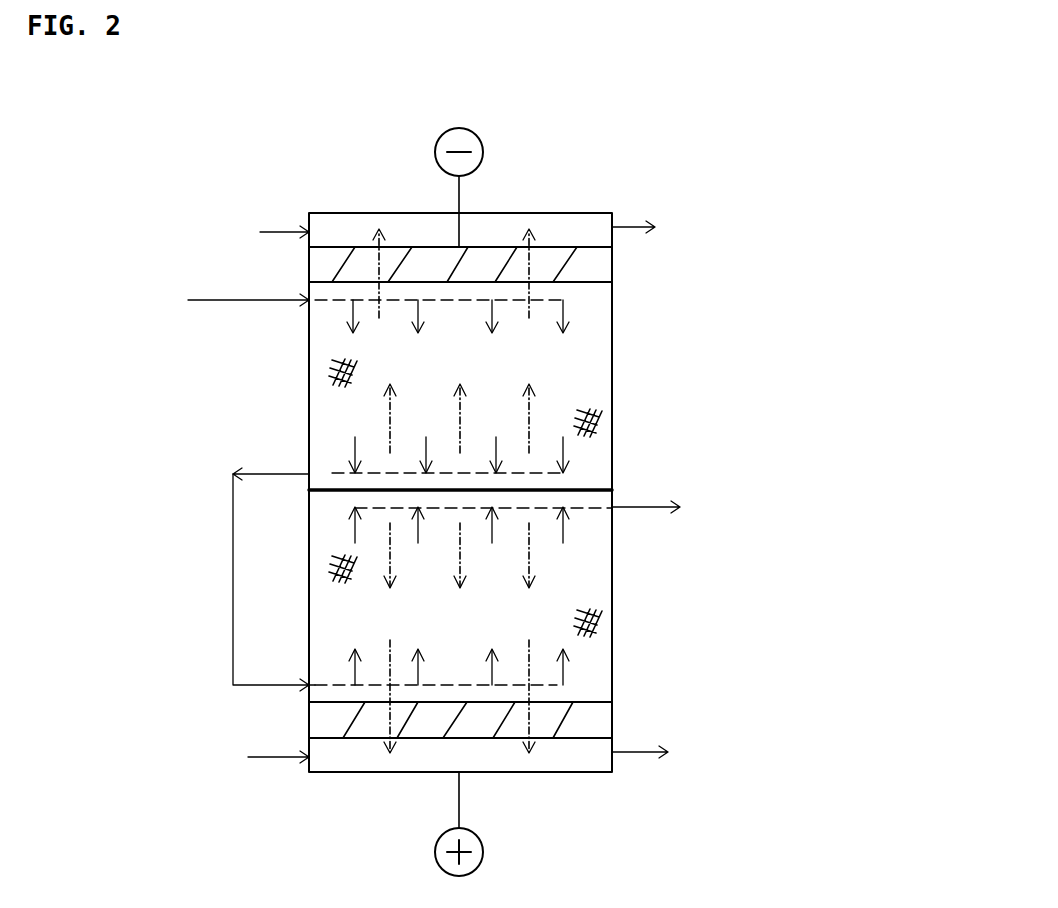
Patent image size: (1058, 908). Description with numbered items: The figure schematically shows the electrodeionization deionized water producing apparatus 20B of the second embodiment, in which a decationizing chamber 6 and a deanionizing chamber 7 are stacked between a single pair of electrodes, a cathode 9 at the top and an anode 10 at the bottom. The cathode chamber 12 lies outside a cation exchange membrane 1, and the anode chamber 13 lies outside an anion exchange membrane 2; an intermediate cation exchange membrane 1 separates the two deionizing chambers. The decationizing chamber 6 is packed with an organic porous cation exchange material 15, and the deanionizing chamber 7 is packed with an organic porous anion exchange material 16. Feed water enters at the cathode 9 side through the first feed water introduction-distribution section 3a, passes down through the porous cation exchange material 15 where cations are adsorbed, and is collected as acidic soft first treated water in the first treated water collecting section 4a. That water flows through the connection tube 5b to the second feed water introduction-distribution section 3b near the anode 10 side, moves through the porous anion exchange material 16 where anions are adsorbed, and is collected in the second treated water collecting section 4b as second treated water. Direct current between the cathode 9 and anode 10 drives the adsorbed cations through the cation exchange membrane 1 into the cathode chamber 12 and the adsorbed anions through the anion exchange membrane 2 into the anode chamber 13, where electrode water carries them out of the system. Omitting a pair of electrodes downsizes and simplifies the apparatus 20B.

The electrodeionization deionized water producing apparatus 20B is at (613, 183).
The cathode chamber 12 is at (502, 202).
The cathode 9 is at (613, 267).
The cation exchange membrane 1 is at (613, 305).
The decationizing chamber 6 is at (613, 348).
The organic porous cation exchange material 15 is at (613, 388).
The first treated water collecting section 4a is at (547, 473).
The first feed water introduction-distribution section 3a is at (333, 300).
The connection tube 5b is at (232, 603).
The deanionizing chamber 7 is at (613, 578).
The organic porous anion exchange material 16 is at (613, 600).
The second treated water collecting section 4b is at (613, 540).
The second feed water introduction-distribution section 3b is at (553, 687).
The anion exchange membrane 2 is at (613, 695).
The anode 10 is at (613, 725).
The anode chamber 13 is at (592, 760).